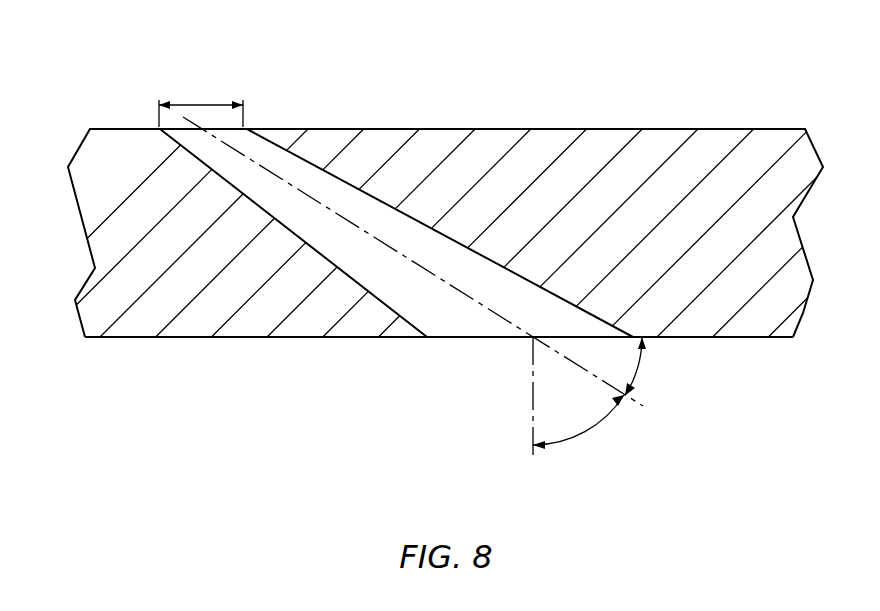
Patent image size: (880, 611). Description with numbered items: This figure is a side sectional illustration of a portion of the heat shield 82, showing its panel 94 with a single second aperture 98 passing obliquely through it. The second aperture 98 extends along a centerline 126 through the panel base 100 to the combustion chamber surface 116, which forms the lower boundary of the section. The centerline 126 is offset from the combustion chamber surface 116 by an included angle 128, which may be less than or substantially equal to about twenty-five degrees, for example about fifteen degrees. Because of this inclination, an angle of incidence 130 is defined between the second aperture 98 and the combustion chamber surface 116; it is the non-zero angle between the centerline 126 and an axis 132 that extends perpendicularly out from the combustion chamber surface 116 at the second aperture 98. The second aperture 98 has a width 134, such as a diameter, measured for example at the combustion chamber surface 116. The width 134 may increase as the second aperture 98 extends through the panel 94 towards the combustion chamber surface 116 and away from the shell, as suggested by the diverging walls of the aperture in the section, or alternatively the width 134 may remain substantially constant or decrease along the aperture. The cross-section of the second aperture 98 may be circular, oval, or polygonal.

The heat shield 82 is at (445, 193).
The panel 94 is at (728, 117).
The second aperture 98 is at (268, 157).
The panel base 100 is at (190, 337).
The combustion chamber surface 116 is at (750, 337).
The centerline 126 is at (498, 315).
The included angle 128 is at (638, 370).
The angle of incidence 130 is at (587, 432).
The axis 132 is at (533, 427).
The width 134 is at (202, 102).